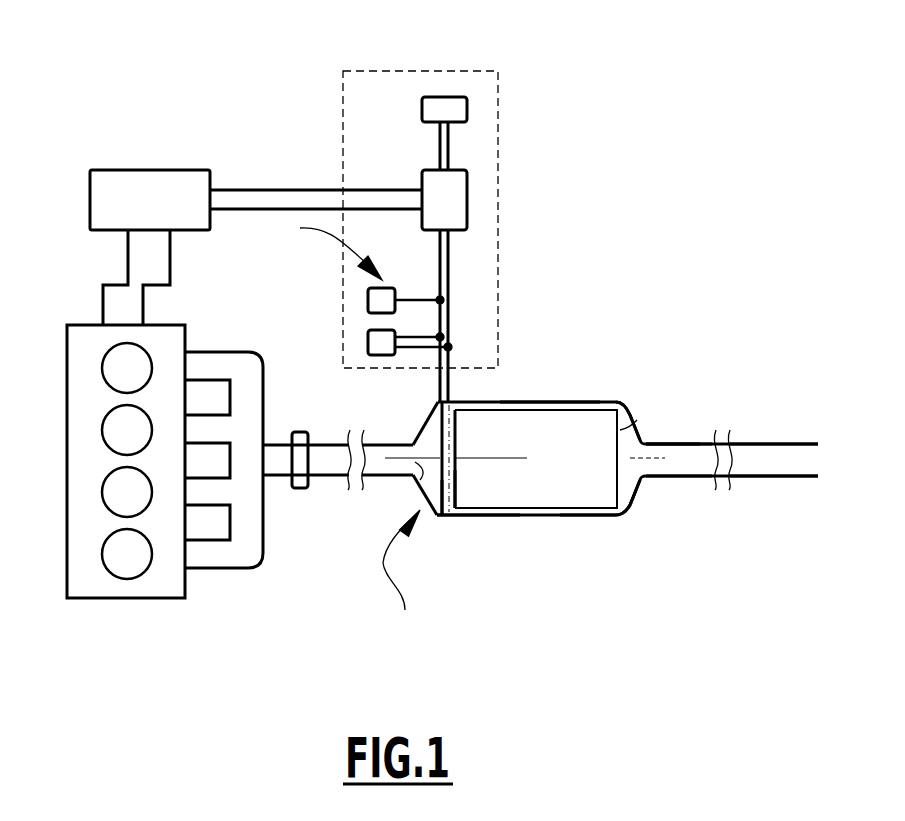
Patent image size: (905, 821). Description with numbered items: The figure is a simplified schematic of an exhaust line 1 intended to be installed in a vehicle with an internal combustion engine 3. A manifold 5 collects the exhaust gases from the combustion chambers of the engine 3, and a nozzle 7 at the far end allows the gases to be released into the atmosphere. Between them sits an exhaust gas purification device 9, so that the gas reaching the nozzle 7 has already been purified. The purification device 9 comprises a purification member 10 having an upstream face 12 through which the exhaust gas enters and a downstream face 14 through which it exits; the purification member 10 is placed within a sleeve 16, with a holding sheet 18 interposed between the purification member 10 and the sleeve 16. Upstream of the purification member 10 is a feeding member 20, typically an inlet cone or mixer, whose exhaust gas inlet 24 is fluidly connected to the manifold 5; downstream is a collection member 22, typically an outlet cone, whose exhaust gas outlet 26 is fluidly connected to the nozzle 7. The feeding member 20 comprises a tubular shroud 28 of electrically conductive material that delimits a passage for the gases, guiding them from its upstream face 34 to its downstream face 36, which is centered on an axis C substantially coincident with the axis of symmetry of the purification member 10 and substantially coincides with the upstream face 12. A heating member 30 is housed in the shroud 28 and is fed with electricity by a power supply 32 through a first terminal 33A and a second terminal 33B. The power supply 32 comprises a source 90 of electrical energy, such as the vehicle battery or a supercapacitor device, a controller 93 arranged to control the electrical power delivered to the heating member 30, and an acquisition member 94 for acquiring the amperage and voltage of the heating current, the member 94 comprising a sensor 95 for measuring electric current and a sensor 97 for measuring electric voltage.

The exhaust line 1 is at (627, 389).
The internal combustion engine 3 is at (82, 422).
The manifold 5 is at (247, 517).
The nozzle 7 is at (777, 442).
The exhaust gas purification device 9 is at (588, 375).
The exhaust gas purification member 10 is at (552, 398).
The upstream face 12 is at (457, 437).
The downstream face 14 is at (640, 428).
The sleeve 16 is at (465, 517).
The holding sheet 18 is at (590, 520).
The feeding member 20 is at (401, 575).
The collection member 22 is at (668, 425).
The exhaust gas inlet 24 is at (410, 468).
The exhaust gas outlet 26 is at (633, 458).
The shroud 28 is at (413, 485).
The heating member 30 is at (427, 517).
The power supply 32 is at (498, 116).
The first terminal 33A is at (437, 388).
The second terminal 33B is at (453, 382).
The upstream face 34 is at (403, 450).
The downstream face 36 is at (457, 487).
The source of electrical energy 90 is at (443, 107).
The controller 93 is at (447, 197).
The acquisition member 94 is at (325, 249).
The electric current sensor 95 is at (373, 300).
The electric voltage sensor 97 is at (373, 343).
The axis C is at (510, 459).